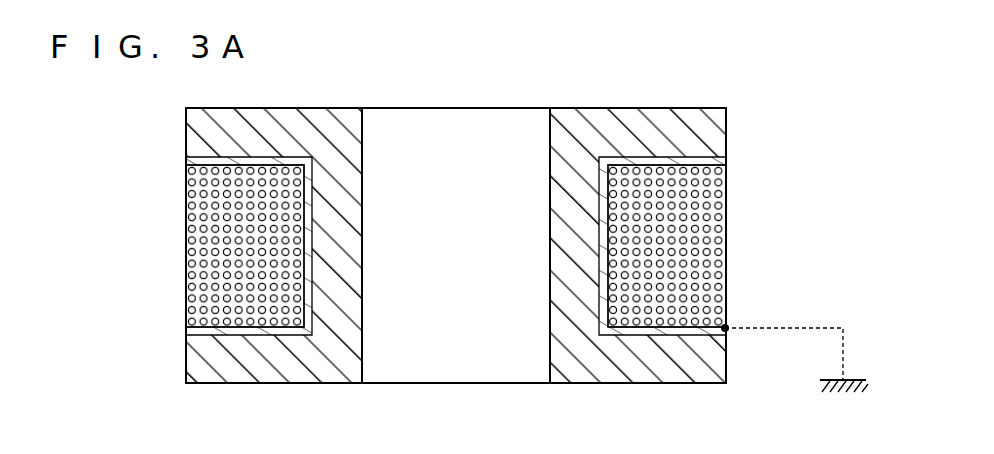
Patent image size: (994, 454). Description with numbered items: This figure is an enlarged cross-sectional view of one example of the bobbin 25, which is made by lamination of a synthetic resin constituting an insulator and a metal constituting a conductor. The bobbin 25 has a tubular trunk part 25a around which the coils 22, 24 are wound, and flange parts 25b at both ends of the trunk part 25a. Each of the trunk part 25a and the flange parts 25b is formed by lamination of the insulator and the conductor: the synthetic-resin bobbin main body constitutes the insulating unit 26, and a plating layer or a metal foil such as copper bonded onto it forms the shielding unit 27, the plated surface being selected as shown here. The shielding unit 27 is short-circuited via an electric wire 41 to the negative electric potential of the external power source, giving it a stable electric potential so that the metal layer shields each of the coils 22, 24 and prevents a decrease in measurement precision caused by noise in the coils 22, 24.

The bobbin 25 is at (506, 229).
The tubular trunk part 25a is at (562, 312).
The flange parts 25b is at (718, 128).
The insulating unit 26 is at (495, 243).
The shielding unit 27 is at (726, 158).
The coil 22 is at (506, 246).
The coil 24 is at (710, 222).
The electric wire 41 is at (812, 327).